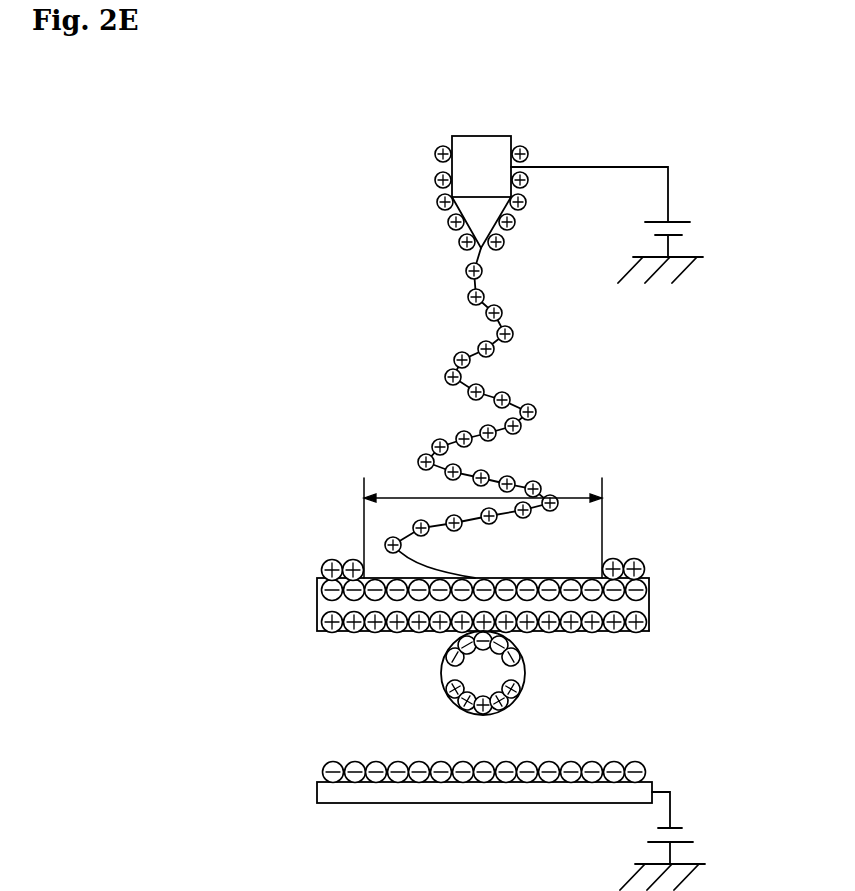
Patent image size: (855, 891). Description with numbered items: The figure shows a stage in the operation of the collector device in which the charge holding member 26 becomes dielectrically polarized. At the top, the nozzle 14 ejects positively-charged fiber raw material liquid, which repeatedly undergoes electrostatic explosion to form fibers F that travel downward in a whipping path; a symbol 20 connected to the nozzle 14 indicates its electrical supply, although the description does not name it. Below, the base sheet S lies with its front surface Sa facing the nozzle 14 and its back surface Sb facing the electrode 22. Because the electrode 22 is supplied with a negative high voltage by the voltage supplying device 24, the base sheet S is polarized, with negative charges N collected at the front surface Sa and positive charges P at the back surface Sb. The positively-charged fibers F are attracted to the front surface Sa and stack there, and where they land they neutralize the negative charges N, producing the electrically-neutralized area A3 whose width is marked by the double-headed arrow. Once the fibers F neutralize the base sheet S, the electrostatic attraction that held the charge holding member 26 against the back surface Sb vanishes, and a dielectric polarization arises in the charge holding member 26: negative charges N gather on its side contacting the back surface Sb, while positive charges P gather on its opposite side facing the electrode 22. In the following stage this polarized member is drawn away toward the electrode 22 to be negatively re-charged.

The nozzle 14 is at (482, 150).
The power supply (capacitor symbol) 20 is at (678, 222).
The fibers F is at (490, 388).
The positive charges P is at (440, 440).
The negative charges N is at (346, 597).
The electrically-neutralized area A3 is at (565, 497).
The base sheet S is at (650, 600).
The front surface Sa is at (645, 578).
The back surface Sb is at (650, 632).
The charge holding member 26 is at (483, 673).
The electrode 22 is at (482, 790).
The voltage supplying device 24 is at (687, 840).